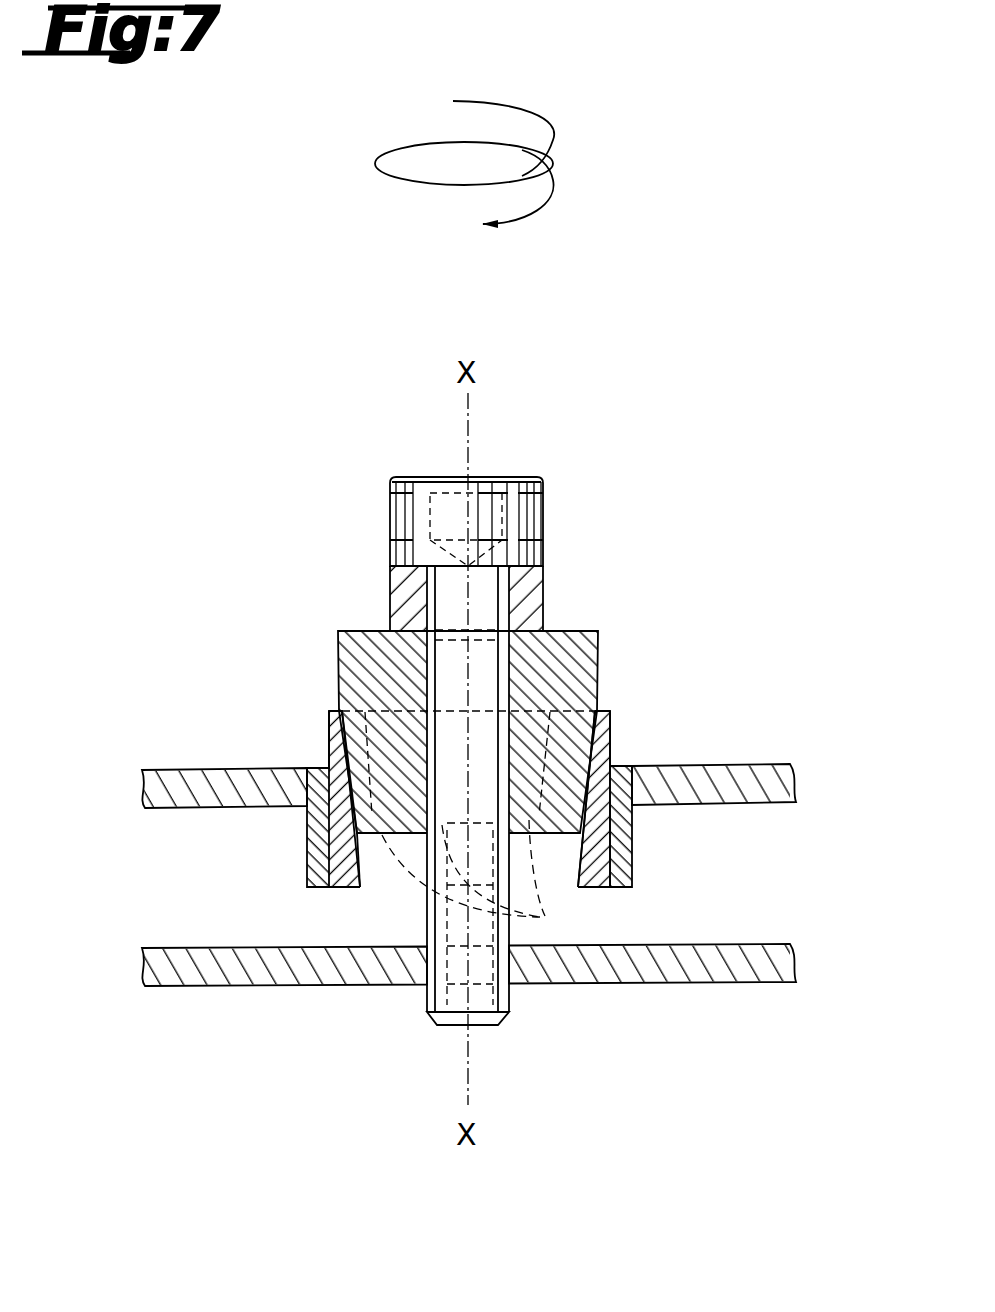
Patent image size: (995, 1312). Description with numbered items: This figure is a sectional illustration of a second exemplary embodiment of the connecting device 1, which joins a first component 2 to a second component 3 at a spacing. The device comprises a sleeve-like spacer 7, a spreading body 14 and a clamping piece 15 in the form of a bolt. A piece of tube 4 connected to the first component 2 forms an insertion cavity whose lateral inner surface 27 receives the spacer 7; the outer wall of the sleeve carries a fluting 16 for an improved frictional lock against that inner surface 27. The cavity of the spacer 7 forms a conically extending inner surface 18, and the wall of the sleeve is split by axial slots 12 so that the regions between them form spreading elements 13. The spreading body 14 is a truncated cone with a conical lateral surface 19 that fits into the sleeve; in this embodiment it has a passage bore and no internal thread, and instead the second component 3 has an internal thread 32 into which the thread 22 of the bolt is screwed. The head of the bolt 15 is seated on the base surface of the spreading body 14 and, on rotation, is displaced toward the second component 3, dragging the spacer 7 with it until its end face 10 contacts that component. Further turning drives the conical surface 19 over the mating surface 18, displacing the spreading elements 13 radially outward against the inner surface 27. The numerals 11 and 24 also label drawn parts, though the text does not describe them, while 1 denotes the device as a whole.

The connecting device 1 is at (215, 568).
The first component 2 is at (750, 766).
The second component 3 is at (763, 945).
The piece of tube 4 is at (620, 865).
The spacer 7 is at (640, 722).
The end face 10 is at (588, 887).
The upper end of sleeve 11 is at (341, 712).
The slots 12 is at (480, 880).
The spreading elements 13 is at (384, 872).
The spreading body 14 is at (603, 652).
The clamping piece 15 is at (523, 478).
The fluting 16 is at (327, 727).
The inner surface 18 is at (360, 858).
The conical lateral surface 19 is at (353, 812).
The thread 22 is at (498, 606).
The inner conical surface 24 is at (578, 820).
The inner surface 27 is at (614, 800).
The internal thread 32 is at (427, 967).